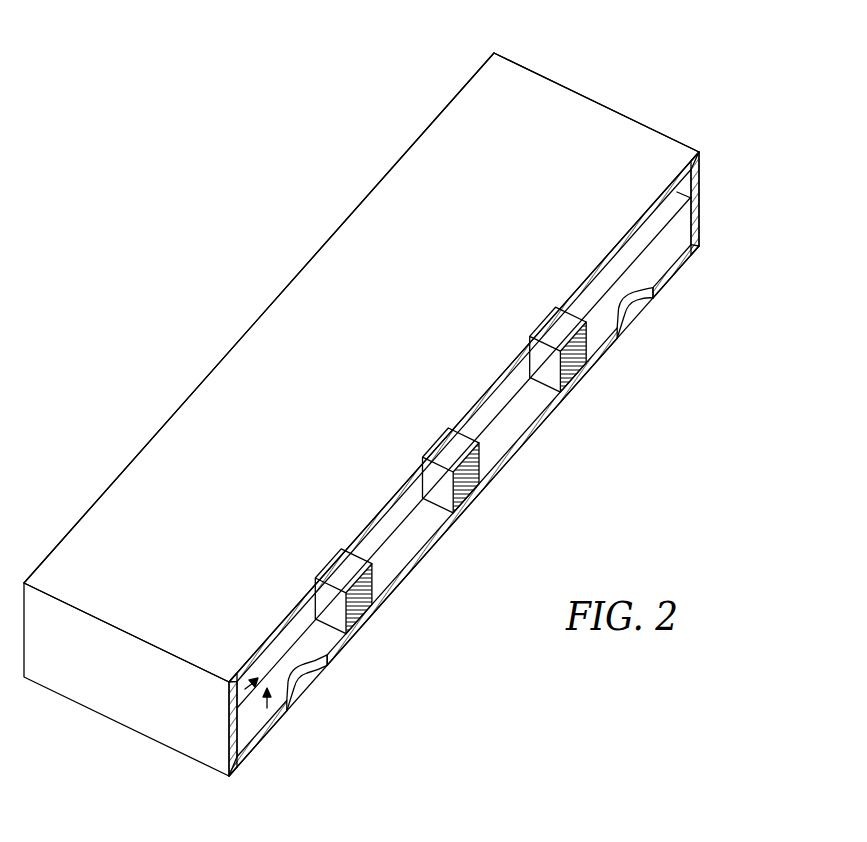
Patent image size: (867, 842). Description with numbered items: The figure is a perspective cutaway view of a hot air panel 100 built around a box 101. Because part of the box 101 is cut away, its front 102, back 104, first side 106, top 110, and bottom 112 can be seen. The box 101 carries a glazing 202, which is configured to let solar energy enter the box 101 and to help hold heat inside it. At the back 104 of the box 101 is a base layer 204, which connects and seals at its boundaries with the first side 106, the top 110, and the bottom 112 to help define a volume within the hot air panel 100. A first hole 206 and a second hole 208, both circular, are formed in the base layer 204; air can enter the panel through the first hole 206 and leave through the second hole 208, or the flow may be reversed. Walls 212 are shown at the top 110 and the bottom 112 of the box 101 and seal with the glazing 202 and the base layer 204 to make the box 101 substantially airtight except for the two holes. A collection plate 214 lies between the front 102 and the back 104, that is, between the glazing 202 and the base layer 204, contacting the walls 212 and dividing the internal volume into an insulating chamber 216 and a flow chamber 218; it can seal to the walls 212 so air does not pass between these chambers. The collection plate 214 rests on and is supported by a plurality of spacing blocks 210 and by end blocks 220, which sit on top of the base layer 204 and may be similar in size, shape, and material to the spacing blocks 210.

The hot air panel 100 is at (708, 33).
The box 101 is at (493, 51).
The front 102 is at (580, 120).
The back 104 is at (440, 552).
The first side 106 is at (315, 237).
The top 110 is at (538, 63).
The bottom 112 is at (118, 692).
The glazing 202 is at (698, 185).
The base layer 204 is at (545, 420).
The first hole 206 is at (648, 316).
The second hole 208 is at (304, 673).
The spacing blocks 210 is at (587, 357).
The walls 212 is at (701, 221).
The collection plate 214 is at (687, 262).
The insulating chamber 216 is at (246, 692).
The flow chamber 218 is at (269, 716).
The end blocks 220 is at (660, 298).